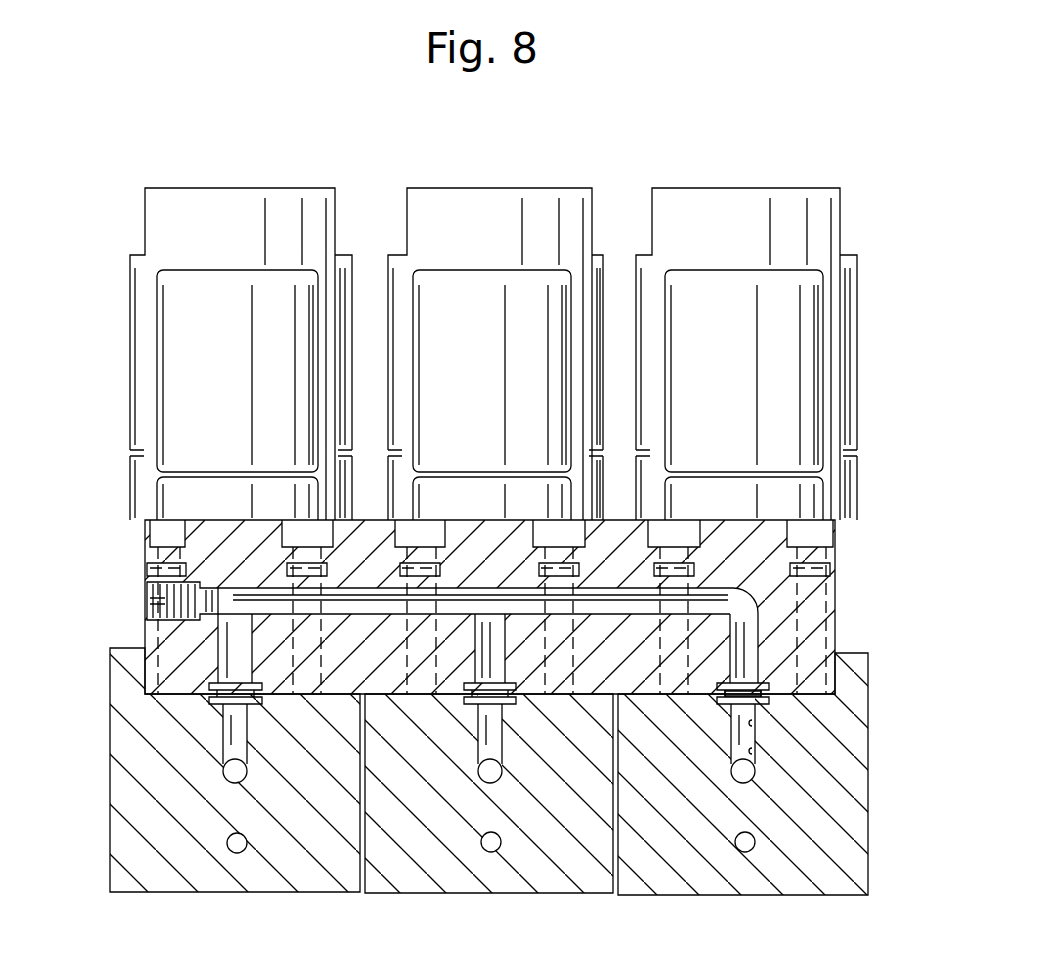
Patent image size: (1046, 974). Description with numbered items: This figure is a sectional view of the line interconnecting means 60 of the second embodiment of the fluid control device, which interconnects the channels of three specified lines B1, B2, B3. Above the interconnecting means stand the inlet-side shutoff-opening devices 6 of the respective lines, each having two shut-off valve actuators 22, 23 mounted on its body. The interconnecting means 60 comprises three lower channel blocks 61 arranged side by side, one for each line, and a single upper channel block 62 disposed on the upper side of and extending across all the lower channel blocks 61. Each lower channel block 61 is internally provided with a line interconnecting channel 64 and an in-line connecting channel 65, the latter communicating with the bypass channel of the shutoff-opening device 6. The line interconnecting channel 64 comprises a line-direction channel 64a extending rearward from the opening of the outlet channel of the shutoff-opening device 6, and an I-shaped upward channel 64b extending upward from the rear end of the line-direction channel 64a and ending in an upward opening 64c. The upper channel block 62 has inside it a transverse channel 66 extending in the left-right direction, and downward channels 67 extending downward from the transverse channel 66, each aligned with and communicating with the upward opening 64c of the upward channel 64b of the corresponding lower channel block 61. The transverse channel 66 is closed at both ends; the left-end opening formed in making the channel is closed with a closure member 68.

The line B1 is at (785, 166).
The line B2 is at (545, 177).
The line B3 is at (143, 207).
The inlet-side shutoff-opening device 6 is at (130, 268).
The shut-off valve actuator 22 is at (803, 312).
The shut-off valve actuator 23 is at (822, 222).
The line interconnecting means 60 is at (143, 579).
The lower channel block 61 is at (130, 787).
The upper channel block 62 is at (763, 562).
The line interconnecting channel 64 is at (478, 722).
The line-direction channel 64a is at (757, 776).
The upward channel 64b is at (755, 752).
The upward opening 64c is at (722, 700).
The in-line connecting channel 65 is at (240, 851).
The transverse channel 66 is at (703, 605).
The downward channel 67 is at (502, 632).
The closure member 68 is at (148, 606).